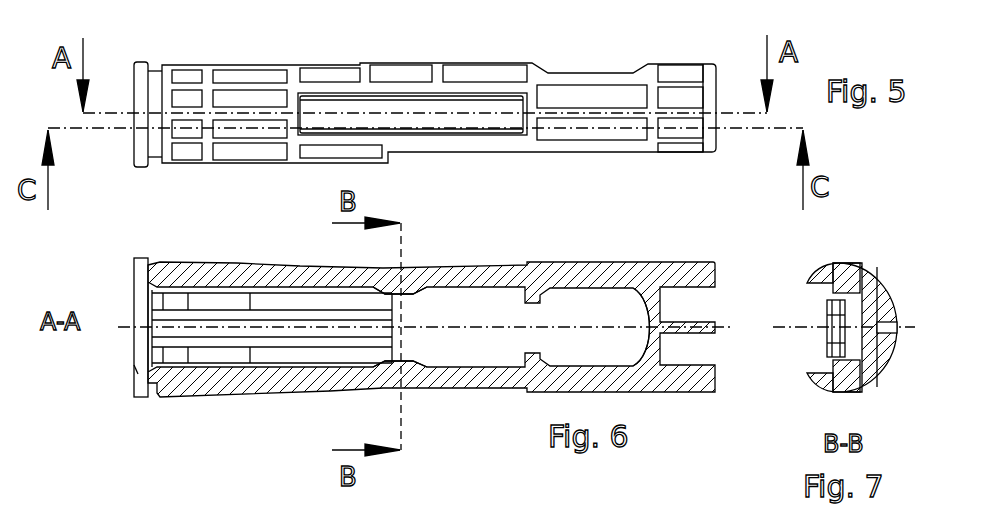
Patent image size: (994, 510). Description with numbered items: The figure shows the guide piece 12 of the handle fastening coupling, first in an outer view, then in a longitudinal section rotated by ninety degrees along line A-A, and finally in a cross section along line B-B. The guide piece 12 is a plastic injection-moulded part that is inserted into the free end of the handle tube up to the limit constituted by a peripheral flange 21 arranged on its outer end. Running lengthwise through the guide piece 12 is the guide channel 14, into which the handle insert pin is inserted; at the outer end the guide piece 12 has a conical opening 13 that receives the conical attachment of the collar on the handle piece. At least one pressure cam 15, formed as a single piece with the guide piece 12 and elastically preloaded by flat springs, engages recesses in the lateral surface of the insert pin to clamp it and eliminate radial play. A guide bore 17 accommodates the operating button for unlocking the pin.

In FIG. 5, the guide piece 12 is at (389, 62).
In FIG. 6, the guide piece 12 is at (565, 258).
In FIG. 6, the conical opening 13 is at (131, 356).
In FIG. 5, the guide channel 14 is at (450, 117).
In FIG. 6, the guide channel 14 is at (457, 322).
In FIG. 7, the guide channel 14 is at (853, 340).
In FIG. 6, the pressure cam 15 is at (407, 282).
In FIG. 7, the pressure cam 15 is at (847, 272).
In FIG. 6, the guide bore 17 is at (604, 322).
In FIG. 5, the peripheral flange 21 is at (141, 56).
In FIG. 6, the peripheral flange 21 is at (140, 400).